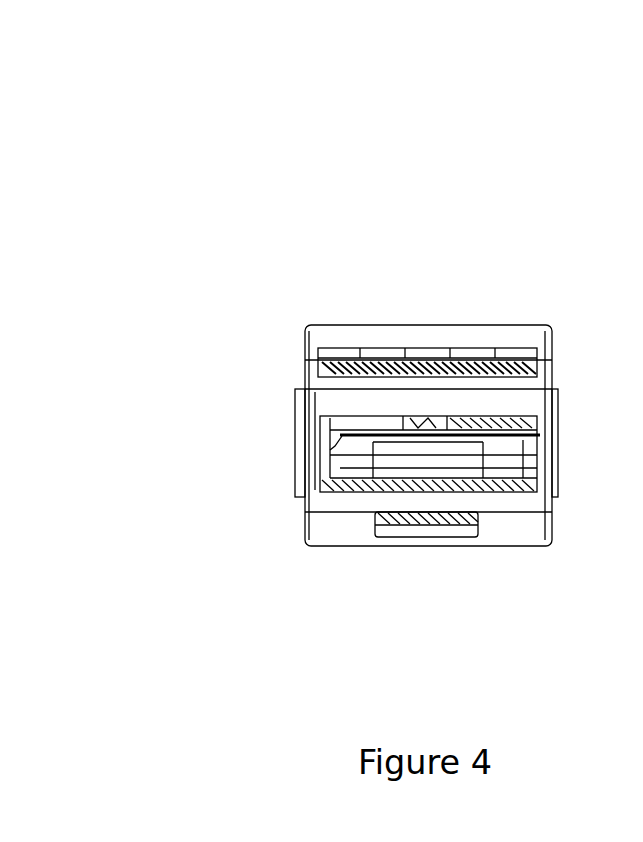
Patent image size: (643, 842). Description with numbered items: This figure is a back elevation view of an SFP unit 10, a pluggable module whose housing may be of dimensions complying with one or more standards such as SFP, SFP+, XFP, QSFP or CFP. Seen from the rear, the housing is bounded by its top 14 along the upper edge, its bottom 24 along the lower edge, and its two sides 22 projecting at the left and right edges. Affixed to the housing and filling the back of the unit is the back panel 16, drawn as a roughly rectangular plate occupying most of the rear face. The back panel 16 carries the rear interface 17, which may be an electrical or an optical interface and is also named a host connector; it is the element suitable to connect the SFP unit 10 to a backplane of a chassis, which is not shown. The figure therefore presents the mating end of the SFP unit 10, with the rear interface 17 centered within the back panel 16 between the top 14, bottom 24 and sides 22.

The SFP unit 10 is at (430, 58).
The top 14 is at (410, 325).
The back panel 16 is at (416, 409).
The rear interface 17 is at (342, 433).
The sides 22 is at (303, 362).
The bottom 24 is at (442, 545).